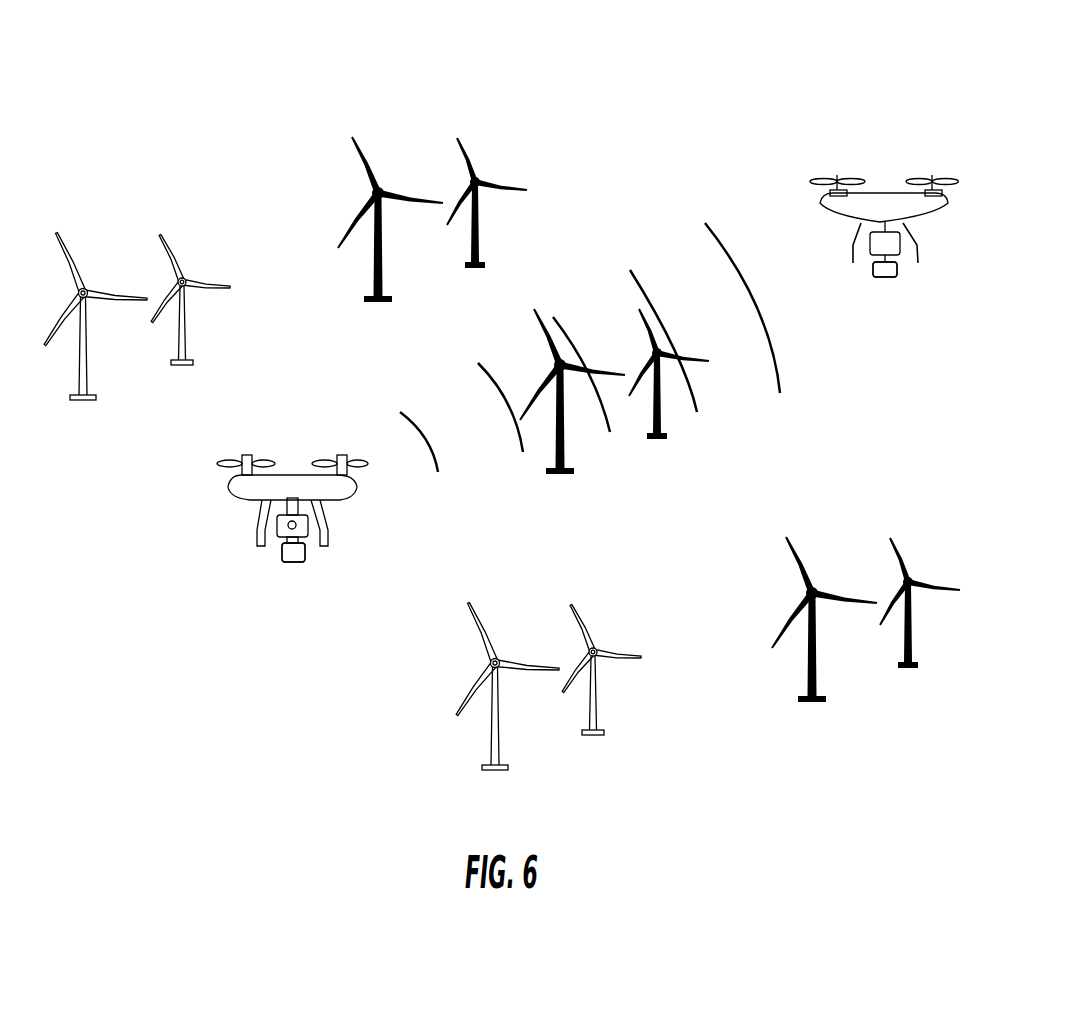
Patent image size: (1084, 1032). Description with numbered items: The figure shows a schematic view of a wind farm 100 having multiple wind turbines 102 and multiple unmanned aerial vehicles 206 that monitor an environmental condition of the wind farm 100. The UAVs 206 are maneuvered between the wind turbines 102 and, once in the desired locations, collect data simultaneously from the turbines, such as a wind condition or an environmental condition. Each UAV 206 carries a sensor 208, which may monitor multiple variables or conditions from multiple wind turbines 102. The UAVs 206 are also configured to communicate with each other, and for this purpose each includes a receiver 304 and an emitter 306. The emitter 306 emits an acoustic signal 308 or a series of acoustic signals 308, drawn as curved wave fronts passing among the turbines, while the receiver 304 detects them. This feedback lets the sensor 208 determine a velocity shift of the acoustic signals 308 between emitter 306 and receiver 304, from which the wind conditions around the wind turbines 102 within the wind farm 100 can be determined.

The wind farm 100 is at (182, 42).
The wind turbine 102 is at (535, 393).
The unmanned aerial vehicle 206 is at (885, 200).
The sensor 208 is at (872, 243).
The receiver 304 is at (882, 278).
The emitter 306 is at (600, 464).
The acoustic signal 308 is at (518, 437).